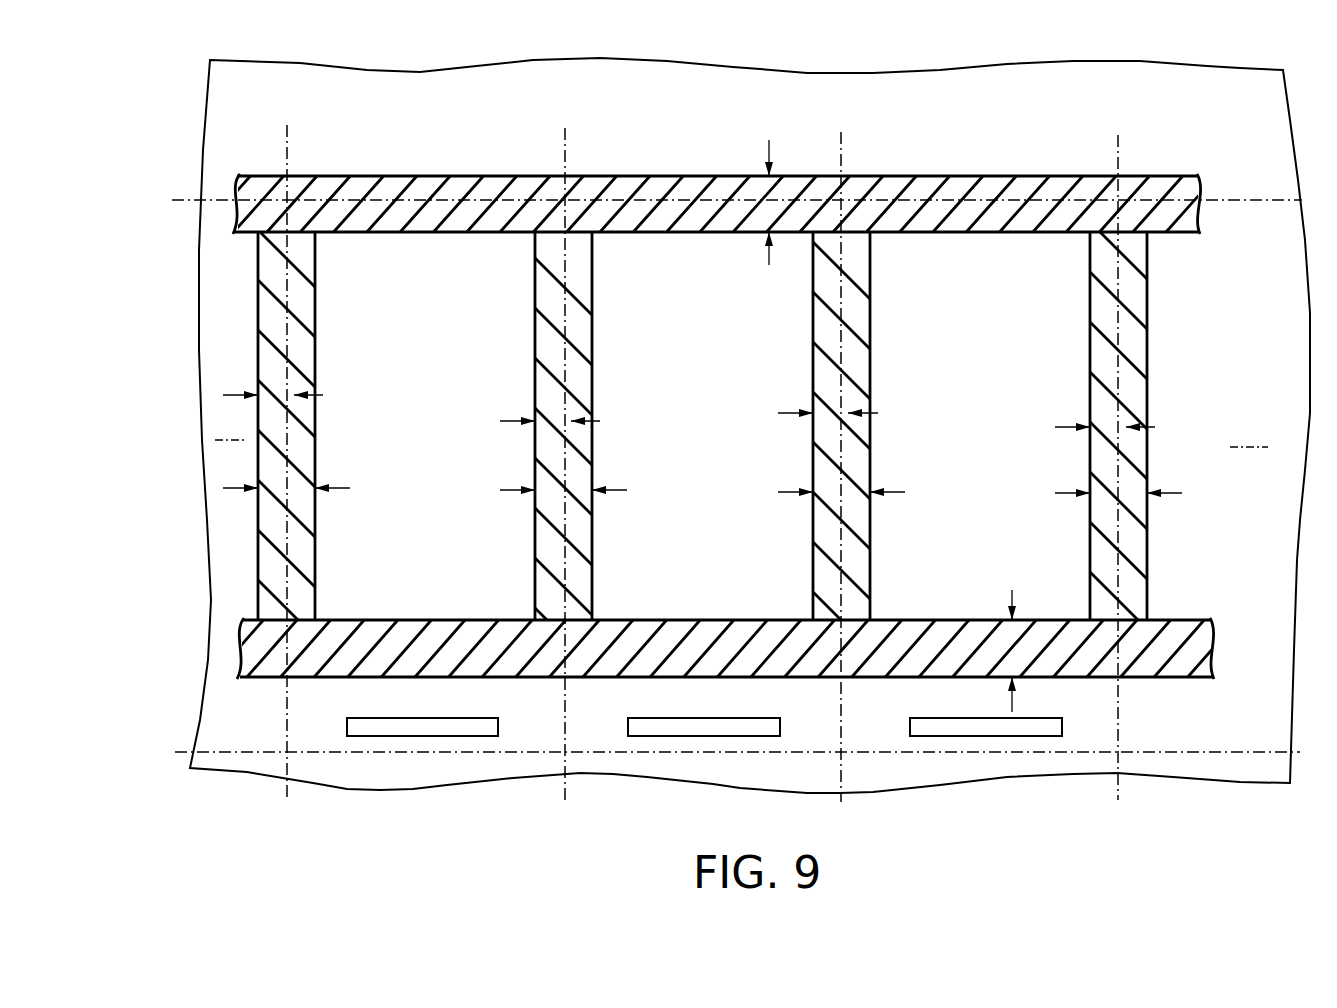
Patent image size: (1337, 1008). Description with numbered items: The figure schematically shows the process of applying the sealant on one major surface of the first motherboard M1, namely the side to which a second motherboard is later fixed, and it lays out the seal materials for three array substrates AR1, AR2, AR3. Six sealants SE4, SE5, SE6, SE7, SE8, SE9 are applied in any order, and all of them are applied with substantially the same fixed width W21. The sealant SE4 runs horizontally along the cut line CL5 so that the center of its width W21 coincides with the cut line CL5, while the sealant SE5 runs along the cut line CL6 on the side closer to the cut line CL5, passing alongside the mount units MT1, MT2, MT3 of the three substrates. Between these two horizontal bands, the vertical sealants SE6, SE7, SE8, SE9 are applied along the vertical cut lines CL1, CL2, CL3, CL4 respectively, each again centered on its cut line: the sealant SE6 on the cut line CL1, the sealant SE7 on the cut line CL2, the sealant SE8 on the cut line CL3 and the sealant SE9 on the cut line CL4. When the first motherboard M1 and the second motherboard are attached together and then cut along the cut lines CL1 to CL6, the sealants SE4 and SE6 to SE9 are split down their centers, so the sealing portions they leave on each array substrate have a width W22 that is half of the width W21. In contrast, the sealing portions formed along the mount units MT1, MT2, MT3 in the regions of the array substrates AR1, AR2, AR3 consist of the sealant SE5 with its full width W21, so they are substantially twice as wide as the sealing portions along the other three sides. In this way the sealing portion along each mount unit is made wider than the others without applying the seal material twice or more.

The first motherboard M1 is at (1247, 90).
The array substrate AR1 is at (455, 190).
The array substrate AR2 is at (723, 190).
The array substrate AR3 is at (988, 190).
The cut line CL1 is at (286, 451).
The cut line CL2 is at (564, 453).
The cut line CL3 is at (841, 455).
The cut line CL4 is at (1117, 455).
The cut line CL5 is at (713, 200).
The cut line CL6 is at (712, 753).
The sealant SE4 is at (1192, 221).
The sealant SE5 is at (1207, 666).
The sealant SE6 is at (300, 552).
The sealant SE7 is at (580, 534).
The sealant SE8 is at (855, 550).
The sealant SE9 is at (1133, 540).
The width W21 is at (290, 486).
The width W22 is at (278, 392).
The mount unit MT1 is at (381, 727).
The mount unit MT2 is at (651, 727).
The mount unit MT3 is at (953, 728).